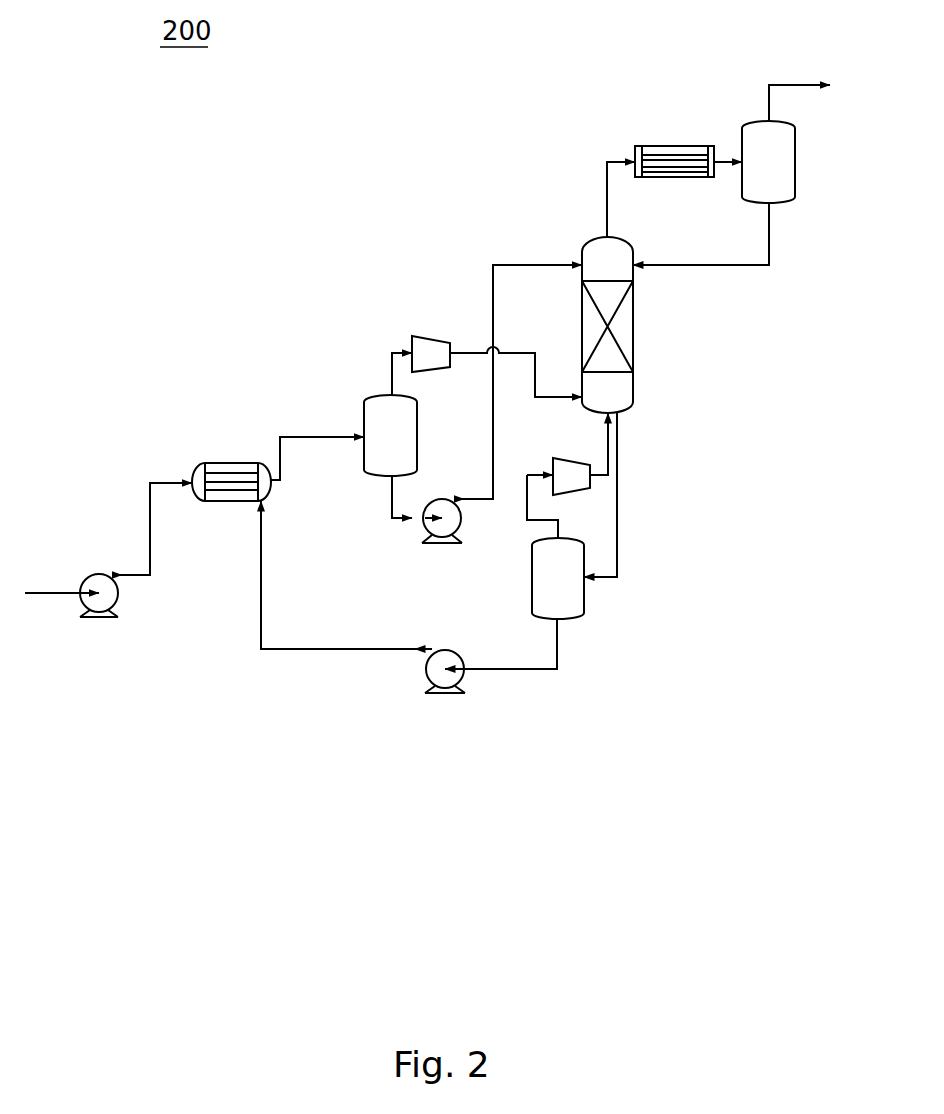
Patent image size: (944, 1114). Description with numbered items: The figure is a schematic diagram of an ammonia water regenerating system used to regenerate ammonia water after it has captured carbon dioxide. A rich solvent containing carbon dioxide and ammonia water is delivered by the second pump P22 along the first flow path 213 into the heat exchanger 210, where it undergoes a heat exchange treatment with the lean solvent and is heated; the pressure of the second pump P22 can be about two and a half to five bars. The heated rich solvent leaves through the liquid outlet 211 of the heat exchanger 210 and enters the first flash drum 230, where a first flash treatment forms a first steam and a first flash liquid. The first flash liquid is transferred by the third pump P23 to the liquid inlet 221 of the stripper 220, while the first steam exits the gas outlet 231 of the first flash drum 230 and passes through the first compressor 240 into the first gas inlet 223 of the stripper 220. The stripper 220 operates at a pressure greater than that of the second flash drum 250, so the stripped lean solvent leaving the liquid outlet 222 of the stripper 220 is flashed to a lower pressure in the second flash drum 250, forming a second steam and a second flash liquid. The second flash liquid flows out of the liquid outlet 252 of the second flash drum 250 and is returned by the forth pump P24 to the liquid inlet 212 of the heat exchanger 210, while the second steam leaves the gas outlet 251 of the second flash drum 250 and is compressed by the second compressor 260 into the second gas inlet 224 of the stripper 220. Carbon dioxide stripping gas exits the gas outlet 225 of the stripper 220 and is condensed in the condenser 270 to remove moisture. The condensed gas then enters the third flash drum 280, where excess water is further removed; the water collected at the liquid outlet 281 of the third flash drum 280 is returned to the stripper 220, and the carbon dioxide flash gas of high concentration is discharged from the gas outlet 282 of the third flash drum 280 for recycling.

The heat exchanger 210 is at (213, 475).
The liquid outlet of the heat exchanger 211 is at (273, 473).
The liquid inlet of the heat exchanger 212 is at (255, 502).
The first flow path 213 is at (150, 565).
The stripper 220 is at (623, 385).
The liquid inlet of the stripper 221 is at (580, 247).
The liquid outlet of the stripper 222 is at (620, 417).
The first gas inlet of the stripper 223 is at (580, 387).
The second gas inlet of the stripper 224 is at (600, 417).
The gas outlet of the stripper 225 is at (608, 235).
The first flash drum 230 is at (375, 415).
The gas outlet of the first flash drum 231 is at (390, 390).
The first compressor 240 is at (428, 342).
The second flash drum 250 is at (565, 600).
The gas outlet of the second flash drum 251 is at (537, 530).
The liquid outlet of the second flash drum 252 is at (558, 625).
The second compressor 260 is at (580, 480).
The condenser 270 is at (660, 150).
The third flash drum 280 is at (788, 165).
The liquid outlet of the third flash drum 281 is at (769, 213).
The gas outlet of the third flash drum 282 is at (770, 120).
The second pump P22 is at (100, 607).
The third pump P23 is at (422, 527).
The forth pump P24 is at (435, 673).